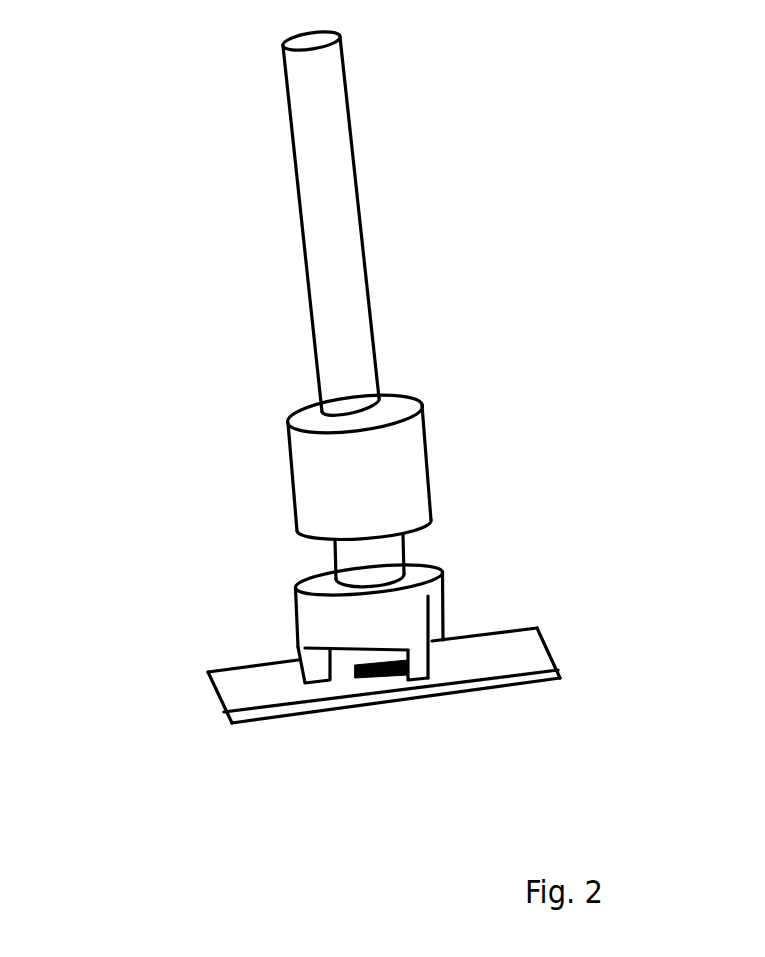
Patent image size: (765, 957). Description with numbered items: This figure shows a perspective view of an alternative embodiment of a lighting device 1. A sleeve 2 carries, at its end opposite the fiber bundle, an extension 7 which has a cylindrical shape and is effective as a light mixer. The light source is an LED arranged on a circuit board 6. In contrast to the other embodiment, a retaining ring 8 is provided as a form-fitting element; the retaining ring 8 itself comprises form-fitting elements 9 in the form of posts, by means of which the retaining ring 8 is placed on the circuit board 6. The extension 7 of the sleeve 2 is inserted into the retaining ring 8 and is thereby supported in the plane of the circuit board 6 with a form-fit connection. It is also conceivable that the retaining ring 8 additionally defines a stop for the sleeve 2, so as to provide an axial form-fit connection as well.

The lighting device 1 is at (387, 376).
The sleeve 2 is at (427, 455).
The circuit board 6 is at (498, 653).
The extension 7 is at (352, 562).
The retaining ring 8 is at (435, 590).
The form-fitting elements 9 is at (318, 672).